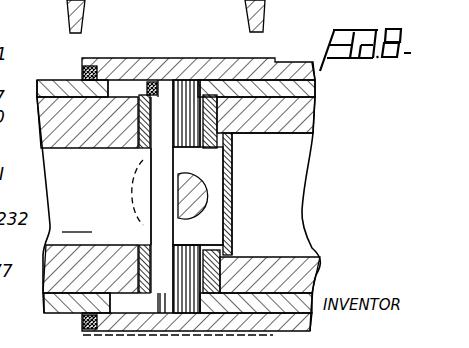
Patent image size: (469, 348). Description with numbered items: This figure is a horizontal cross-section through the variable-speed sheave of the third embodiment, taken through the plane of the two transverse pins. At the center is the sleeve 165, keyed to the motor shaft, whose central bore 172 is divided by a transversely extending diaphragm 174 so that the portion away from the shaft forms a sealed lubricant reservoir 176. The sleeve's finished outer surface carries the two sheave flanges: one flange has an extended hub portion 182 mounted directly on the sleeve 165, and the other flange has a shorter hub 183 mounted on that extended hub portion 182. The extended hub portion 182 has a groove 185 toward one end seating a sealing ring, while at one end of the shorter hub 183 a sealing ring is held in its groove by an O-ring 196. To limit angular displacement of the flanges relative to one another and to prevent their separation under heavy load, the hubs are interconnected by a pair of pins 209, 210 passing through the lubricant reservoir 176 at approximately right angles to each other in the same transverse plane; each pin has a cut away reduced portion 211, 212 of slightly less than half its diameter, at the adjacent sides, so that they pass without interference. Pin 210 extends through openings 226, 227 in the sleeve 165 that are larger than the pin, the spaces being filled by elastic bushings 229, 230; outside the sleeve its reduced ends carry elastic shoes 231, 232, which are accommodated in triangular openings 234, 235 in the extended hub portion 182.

The sleeve 165 is at (313, 115).
The central bore 172 is at (308, 215).
The diaphragm 174 is at (229, 156).
The lubricant reservoir 176 is at (77, 222).
The extended hub portion 182 is at (37, 96).
The shorter hub 183 is at (102, 70).
The groove 185 is at (83, 320).
The O-ring 196 is at (171, 63).
The pin 209 is at (200, 188).
The pin 210 is at (165, 158).
The cut away reduced portion 211 is at (176, 202).
The cut away reduced portion 212 is at (176, 158).
The opening 226 is at (138, 122).
The opening 227 is at (140, 255).
The bushing 229 is at (146, 100).
The bushing 230 is at (213, 247).
The shoe 231 is at (161, 90).
The shoe 232 is at (165, 290).
The triangular opening 234 is at (203, 97).
The triangular opening 235 is at (112, 300).